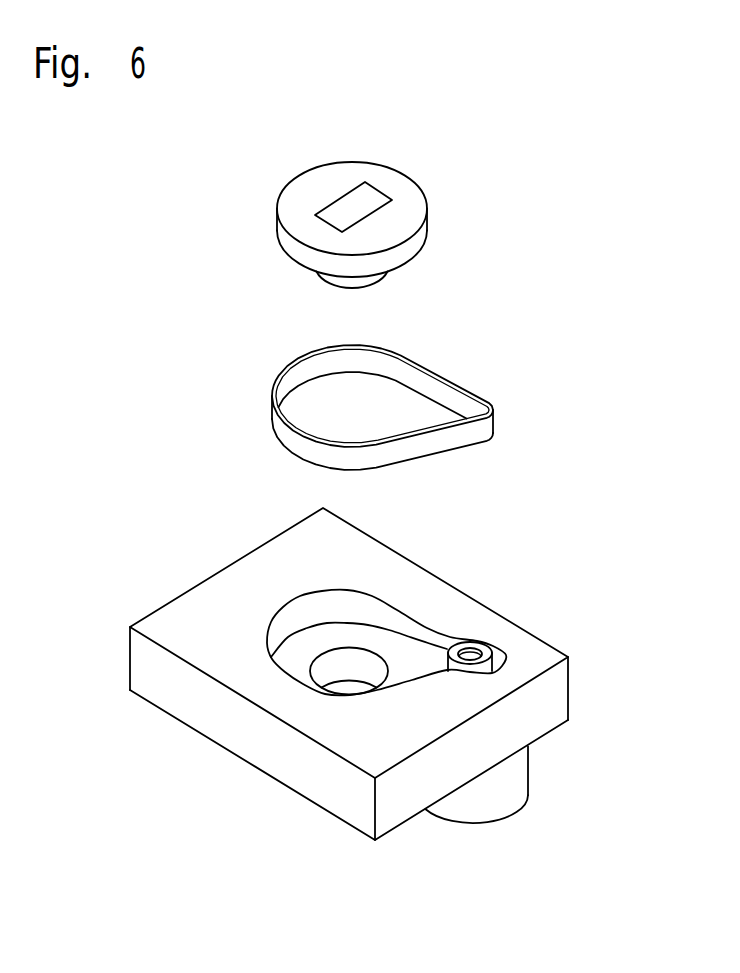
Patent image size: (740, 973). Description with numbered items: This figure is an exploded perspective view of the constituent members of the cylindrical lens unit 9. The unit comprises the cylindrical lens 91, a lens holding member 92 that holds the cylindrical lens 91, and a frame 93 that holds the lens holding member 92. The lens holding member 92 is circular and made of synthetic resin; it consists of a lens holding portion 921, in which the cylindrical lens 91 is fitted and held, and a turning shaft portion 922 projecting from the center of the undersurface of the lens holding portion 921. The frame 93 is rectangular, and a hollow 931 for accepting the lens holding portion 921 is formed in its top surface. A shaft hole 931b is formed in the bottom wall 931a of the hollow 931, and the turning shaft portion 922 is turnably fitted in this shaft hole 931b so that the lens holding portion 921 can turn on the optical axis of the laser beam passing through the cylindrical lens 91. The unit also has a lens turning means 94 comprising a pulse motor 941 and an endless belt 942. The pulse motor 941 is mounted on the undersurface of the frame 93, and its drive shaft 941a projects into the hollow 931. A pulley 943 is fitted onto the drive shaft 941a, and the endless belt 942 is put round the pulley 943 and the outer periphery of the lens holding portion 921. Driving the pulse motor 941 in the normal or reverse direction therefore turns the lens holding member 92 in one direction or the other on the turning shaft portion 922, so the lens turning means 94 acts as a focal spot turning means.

The cylindrical lens unit 9 is at (517, 248).
The cylindrical lens 91 is at (333, 210).
The lens holding member 92 is at (333, 209).
The lens holding portion 921 is at (427, 243).
The turning shaft portion 922 is at (367, 282).
The frame 93 is at (493, 612).
The hollow 931 is at (402, 625).
The bottom wall 931a is at (303, 647).
The shaft hole 931b is at (358, 658).
The lens turning means 94 is at (535, 784).
The pulse motor 941 is at (530, 770).
The drive shaft 941a is at (478, 654).
The endless belt 942 is at (442, 375).
The pulley 943 is at (537, 637).